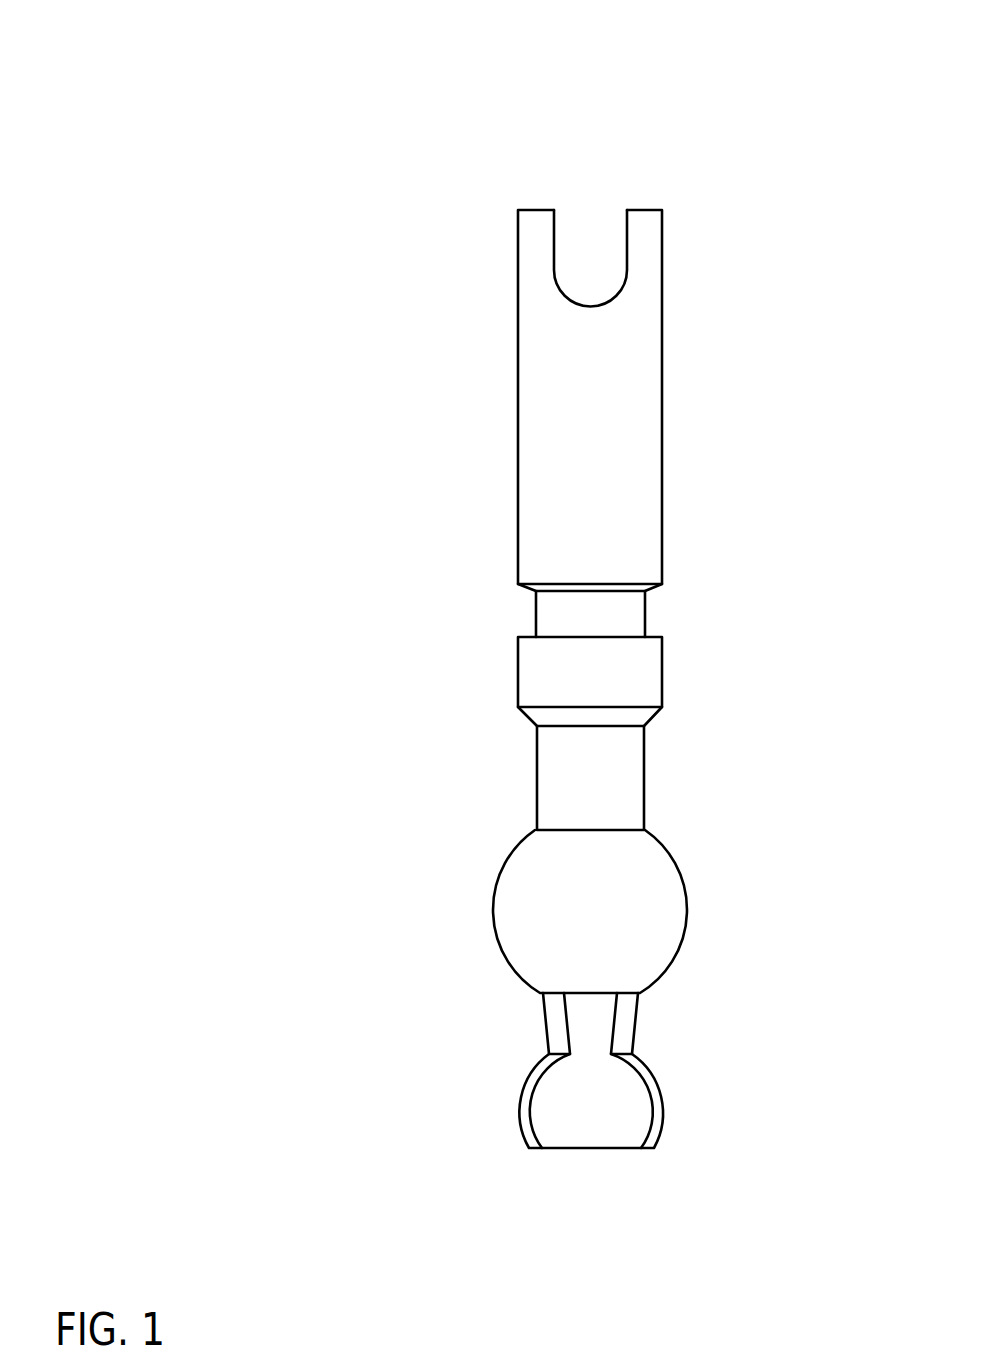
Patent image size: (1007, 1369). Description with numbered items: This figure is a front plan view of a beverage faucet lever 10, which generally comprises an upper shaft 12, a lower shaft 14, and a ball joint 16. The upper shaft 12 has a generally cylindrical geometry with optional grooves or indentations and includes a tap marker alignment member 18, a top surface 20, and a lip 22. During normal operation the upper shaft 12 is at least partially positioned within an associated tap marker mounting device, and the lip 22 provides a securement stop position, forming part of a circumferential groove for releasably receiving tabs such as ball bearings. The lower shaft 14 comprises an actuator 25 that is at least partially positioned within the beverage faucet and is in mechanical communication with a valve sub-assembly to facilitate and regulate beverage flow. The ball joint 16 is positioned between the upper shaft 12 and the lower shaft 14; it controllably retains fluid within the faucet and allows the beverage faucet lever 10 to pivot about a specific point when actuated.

The beverage faucet lever 10 is at (402, 337).
The upper shaft 12 is at (682, 210).
The lower shaft 14 is at (682, 993).
The ball joint 16 is at (528, 913).
The tap marker alignment member 18 is at (661, 152).
The top surface 20 is at (537, 210).
The lip 22 is at (518, 584).
The actuator 25 is at (560, 1110).